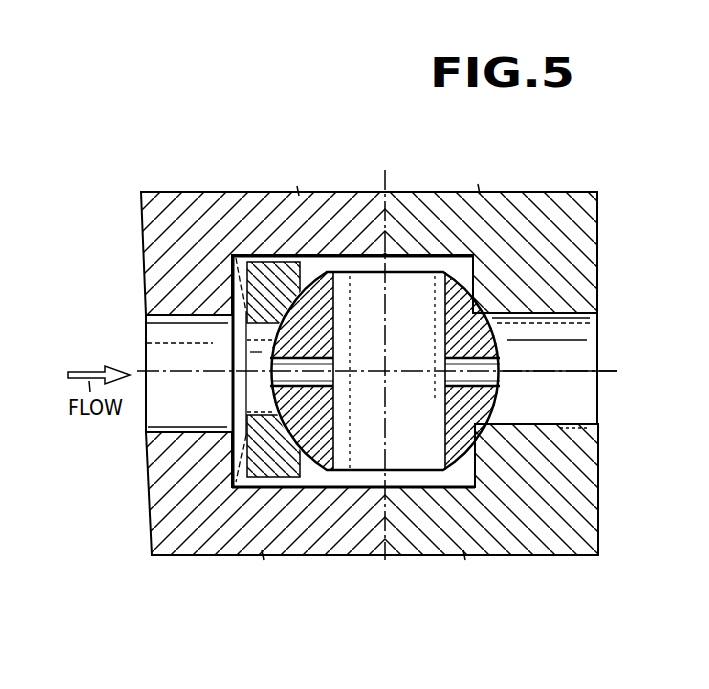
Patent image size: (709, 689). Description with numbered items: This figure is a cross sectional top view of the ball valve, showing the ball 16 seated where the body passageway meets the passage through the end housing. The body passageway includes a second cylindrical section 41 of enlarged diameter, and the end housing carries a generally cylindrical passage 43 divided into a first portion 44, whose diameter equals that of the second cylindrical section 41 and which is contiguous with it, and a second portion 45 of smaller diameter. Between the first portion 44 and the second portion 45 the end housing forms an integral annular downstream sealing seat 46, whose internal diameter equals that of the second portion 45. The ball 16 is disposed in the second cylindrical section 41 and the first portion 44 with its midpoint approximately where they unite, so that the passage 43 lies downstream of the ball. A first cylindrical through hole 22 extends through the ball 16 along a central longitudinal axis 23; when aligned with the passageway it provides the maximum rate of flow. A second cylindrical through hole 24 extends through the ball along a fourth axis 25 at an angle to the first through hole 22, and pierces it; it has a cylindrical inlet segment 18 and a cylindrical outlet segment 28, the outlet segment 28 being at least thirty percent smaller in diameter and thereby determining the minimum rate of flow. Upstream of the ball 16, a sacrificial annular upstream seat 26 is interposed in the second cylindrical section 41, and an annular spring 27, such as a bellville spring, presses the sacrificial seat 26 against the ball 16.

The ball 16 is at (476, 300).
The cylindrical inlet segment 18 is at (334, 272).
The first cylindrical through hole 22 is at (428, 455).
The central longitudinal axis 23 is at (387, 285).
The second cylindrical through hole 24 is at (507, 363).
The fourth axis 25 is at (507, 378).
The sacrificial annular upstream seat 26 is at (266, 488).
The annular spring 27 is at (232, 474).
The cylindrical outlet segment 28 is at (432, 380).
The second cylindrical section 41 is at (316, 270).
The generally cylindrical passage 43 is at (540, 424).
The first portion 44 is at (457, 262).
The second portion 45 is at (540, 423).
The integral annular downstream sealing seat 46 is at (480, 443).